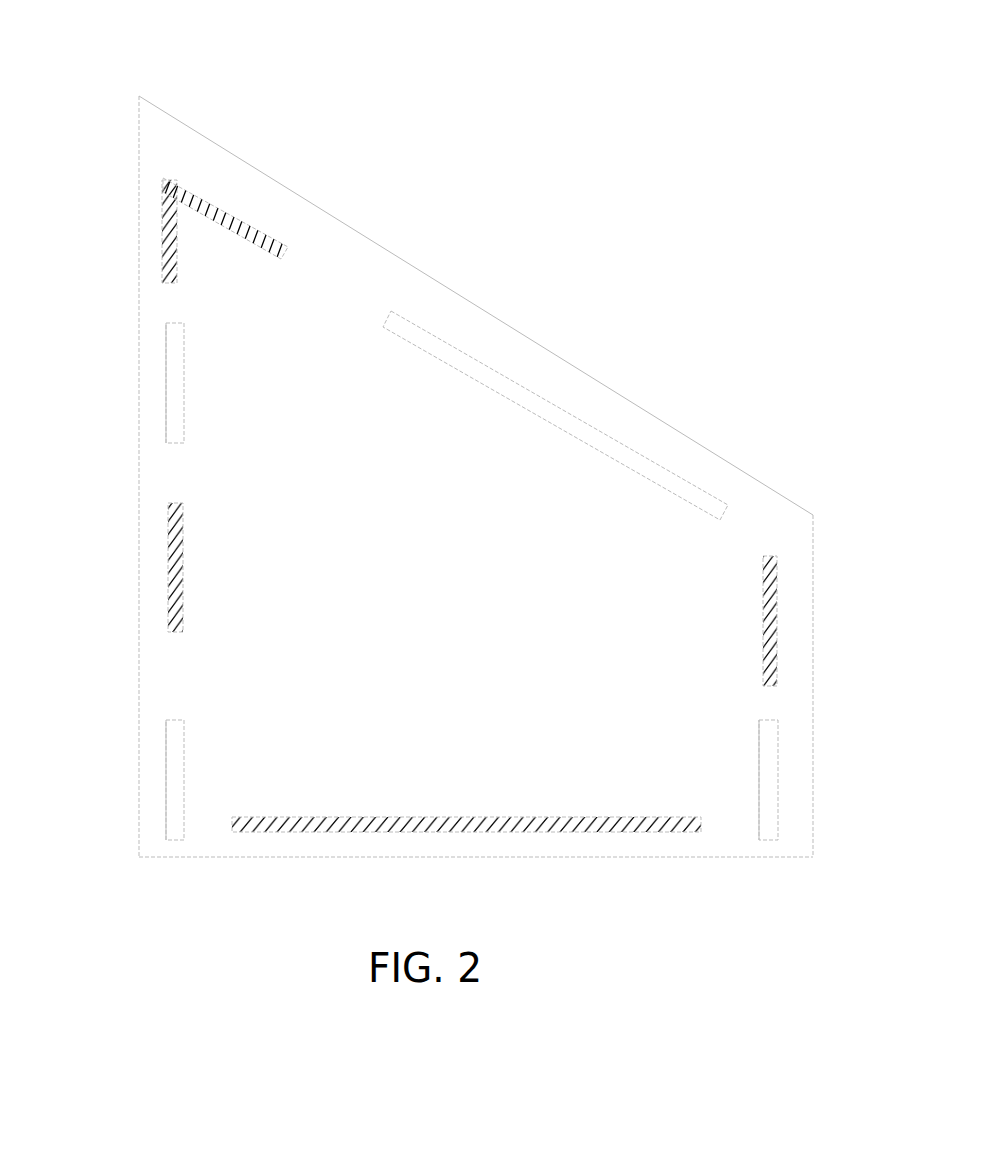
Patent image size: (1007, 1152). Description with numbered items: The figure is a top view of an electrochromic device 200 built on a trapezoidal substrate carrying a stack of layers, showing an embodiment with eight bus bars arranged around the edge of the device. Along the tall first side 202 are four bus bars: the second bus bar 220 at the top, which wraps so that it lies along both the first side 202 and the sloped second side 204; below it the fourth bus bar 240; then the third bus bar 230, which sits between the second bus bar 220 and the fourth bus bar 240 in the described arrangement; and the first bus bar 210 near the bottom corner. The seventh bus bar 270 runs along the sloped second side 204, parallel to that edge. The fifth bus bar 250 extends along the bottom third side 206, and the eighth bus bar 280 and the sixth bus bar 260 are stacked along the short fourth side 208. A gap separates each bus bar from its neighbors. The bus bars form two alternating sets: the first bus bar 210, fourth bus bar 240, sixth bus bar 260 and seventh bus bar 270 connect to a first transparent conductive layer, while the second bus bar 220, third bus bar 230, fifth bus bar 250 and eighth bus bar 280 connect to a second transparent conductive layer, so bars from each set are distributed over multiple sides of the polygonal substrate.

The electrochromic device 200 is at (190, 78).
The first side 202 is at (139, 663).
The second side 204 is at (433, 280).
The third side 206 is at (307, 857).
The fourth side 208 is at (814, 687).
The first bus bar 210 is at (166, 758).
The second bus bar 220 is at (163, 215).
The third bus bar 230 is at (168, 573).
The fourth bus bar 240 is at (166, 368).
The fifth bus bar 250 is at (494, 833).
The sixth bus bar 260 is at (778, 767).
The seventh bus bar 270 is at (563, 410).
The eighth bus bar 280 is at (777, 630).